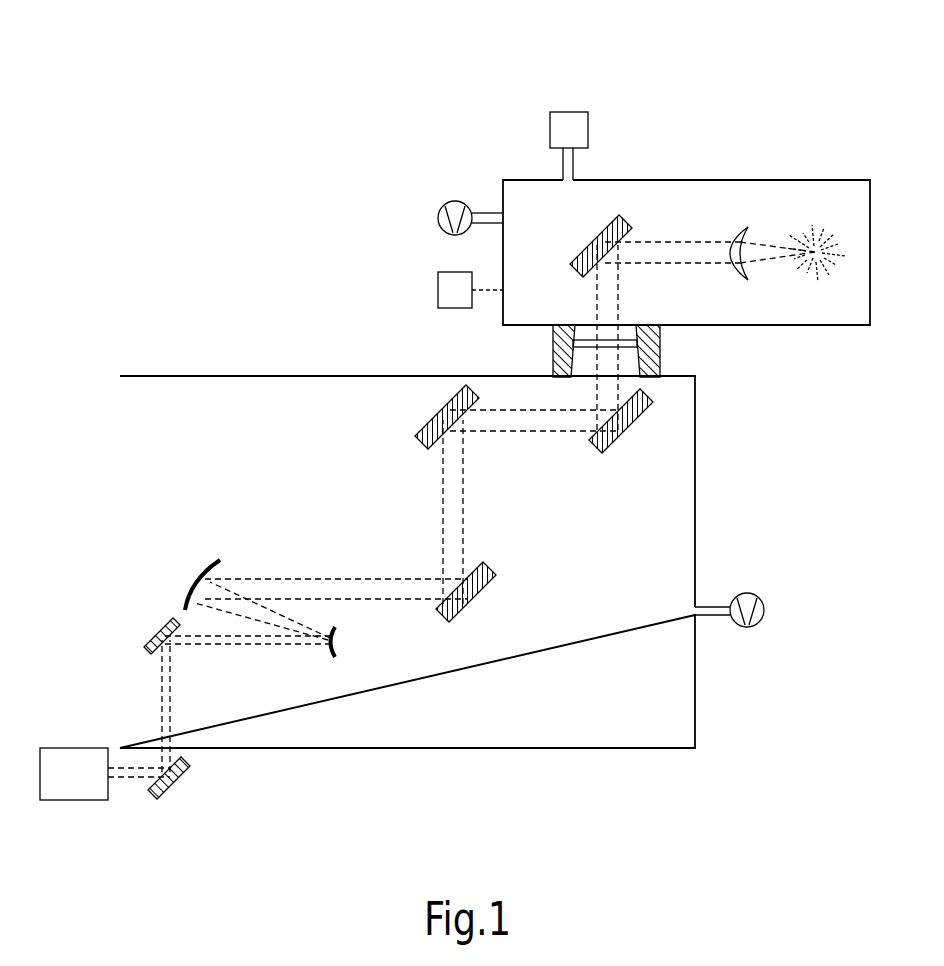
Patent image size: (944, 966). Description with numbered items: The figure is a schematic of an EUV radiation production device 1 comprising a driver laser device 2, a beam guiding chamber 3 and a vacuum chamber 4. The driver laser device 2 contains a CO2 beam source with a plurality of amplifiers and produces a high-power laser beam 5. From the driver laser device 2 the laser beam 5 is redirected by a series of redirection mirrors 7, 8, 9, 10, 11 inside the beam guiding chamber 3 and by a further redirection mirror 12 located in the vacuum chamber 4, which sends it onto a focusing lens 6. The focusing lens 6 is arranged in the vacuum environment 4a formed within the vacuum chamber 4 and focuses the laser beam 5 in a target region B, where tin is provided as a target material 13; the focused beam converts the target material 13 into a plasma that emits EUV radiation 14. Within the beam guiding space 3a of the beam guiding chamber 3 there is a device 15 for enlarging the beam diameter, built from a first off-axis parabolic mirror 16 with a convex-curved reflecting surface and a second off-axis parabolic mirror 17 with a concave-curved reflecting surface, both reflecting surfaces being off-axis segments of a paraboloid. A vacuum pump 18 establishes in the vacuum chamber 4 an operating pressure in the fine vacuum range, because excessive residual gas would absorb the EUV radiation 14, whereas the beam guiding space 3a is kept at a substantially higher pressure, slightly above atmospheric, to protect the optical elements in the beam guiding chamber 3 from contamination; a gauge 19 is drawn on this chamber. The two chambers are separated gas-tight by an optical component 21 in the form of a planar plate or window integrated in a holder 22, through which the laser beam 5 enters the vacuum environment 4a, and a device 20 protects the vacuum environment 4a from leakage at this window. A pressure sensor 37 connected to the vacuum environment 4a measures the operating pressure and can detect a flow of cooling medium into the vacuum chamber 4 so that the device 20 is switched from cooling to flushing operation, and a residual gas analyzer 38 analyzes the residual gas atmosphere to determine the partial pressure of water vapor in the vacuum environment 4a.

The EUV radiation production device 1 is at (330, 198).
The driver laser device 2 is at (66, 762).
The beam guiding chamber 3 is at (150, 480).
The beam guiding space 3a is at (636, 518).
The vacuum chamber 4 is at (527, 180).
The vacuum environment 4a is at (706, 221).
The laser beam 5 is at (118, 786).
The focusing lens 6 is at (735, 247).
The redirection mirror 7 is at (175, 785).
The redirection mirror 8 is at (150, 640).
The redirection mirror 9 is at (455, 615).
The redirection mirror 10 is at (432, 425).
The redirection mirror 11 is at (655, 410).
The redirection mirror 12 is at (602, 240).
The target material 13 is at (812, 262).
The EUV radiation 14 is at (842, 245).
The device for enlarging a beam diameter 15 is at (232, 568).
The first off-axis parabolic mirror 16 is at (338, 645).
The second off-axis parabolic mirror 17 is at (193, 590).
The vacuum pump 18 is at (452, 215).
The pressure gauge 19 is at (748, 605).
The device for protecting the vacuum environment 20 is at (592, 348).
The optical component 21 is at (647, 343).
The holder 22 is at (563, 350).
The pressure sensor 37 is at (452, 292).
The residual gas analyzer 38 is at (575, 130).
The target region B is at (815, 247).